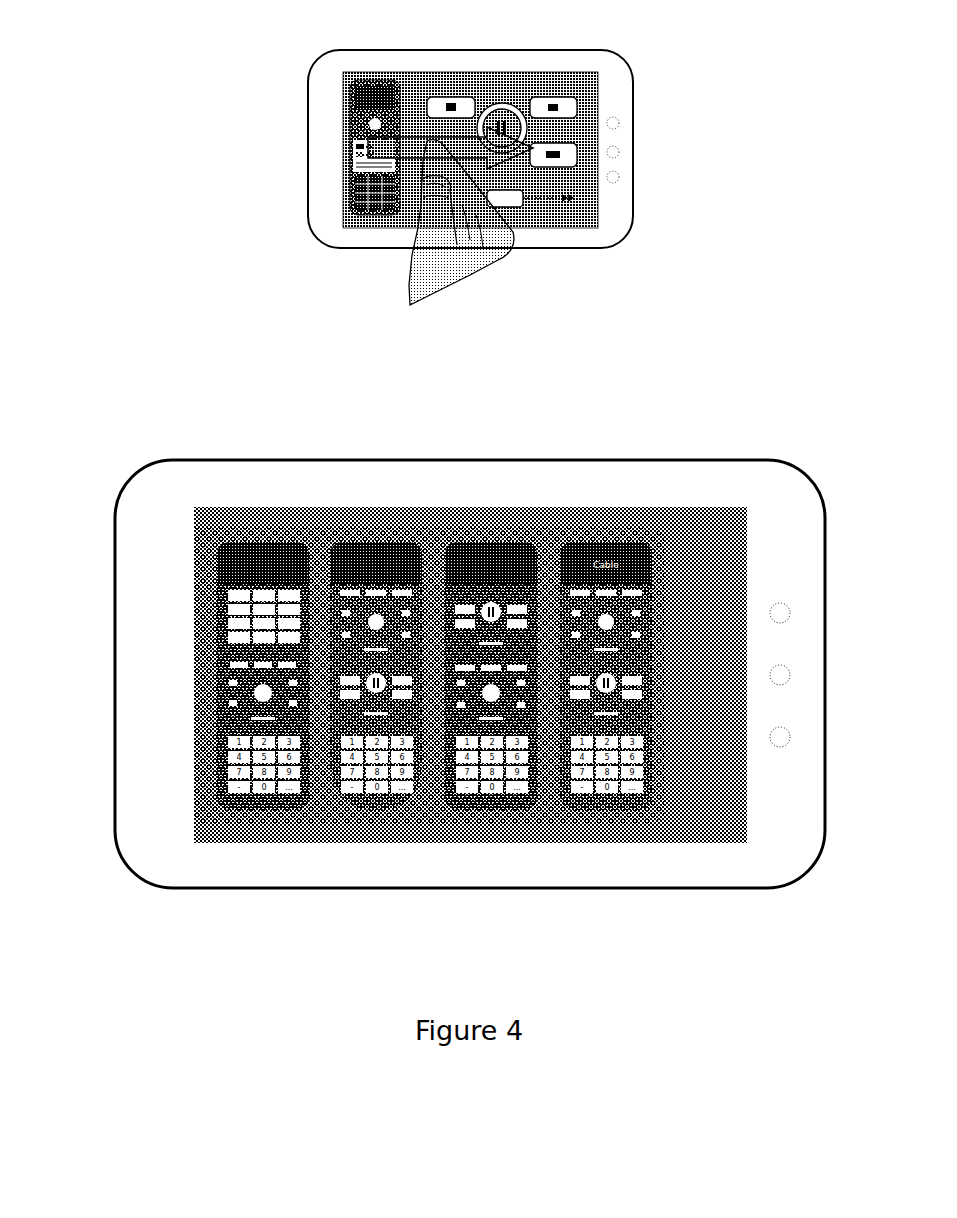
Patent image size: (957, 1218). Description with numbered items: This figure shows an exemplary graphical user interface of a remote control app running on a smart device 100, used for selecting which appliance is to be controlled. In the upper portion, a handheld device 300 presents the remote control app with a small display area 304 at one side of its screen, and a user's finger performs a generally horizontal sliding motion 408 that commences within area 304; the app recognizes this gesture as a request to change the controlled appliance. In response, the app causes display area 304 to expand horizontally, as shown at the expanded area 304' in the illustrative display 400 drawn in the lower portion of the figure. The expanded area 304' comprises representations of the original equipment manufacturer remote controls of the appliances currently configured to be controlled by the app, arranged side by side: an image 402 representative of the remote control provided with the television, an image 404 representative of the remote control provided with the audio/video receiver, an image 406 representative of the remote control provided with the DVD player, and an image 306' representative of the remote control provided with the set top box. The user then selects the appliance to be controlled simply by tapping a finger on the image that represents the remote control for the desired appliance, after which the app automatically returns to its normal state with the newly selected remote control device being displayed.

The smart device 100 is at (662, 890).
The portable remote control device 300 is at (578, 72).
The display area 304 is at (321, 114).
The expanded display area 304' is at (136, 646).
The image representative of STB remote control 306' is at (430, 613).
The illustrative display 400 is at (692, 507).
The image representative of TV remote control 402 is at (263, 542).
The image representative of AVR remote control 404 is at (378, 542).
The image representative of DVD player remote control 406 is at (480, 542).
The horizontal sliding motion 408 is at (452, 110).